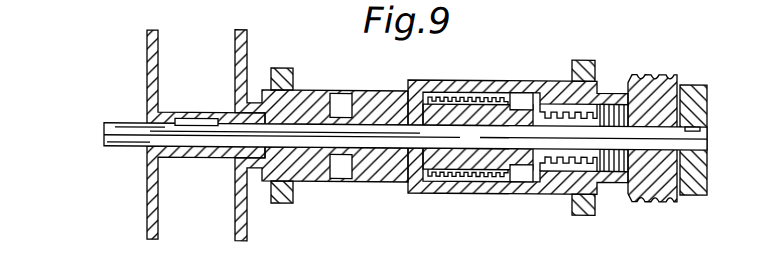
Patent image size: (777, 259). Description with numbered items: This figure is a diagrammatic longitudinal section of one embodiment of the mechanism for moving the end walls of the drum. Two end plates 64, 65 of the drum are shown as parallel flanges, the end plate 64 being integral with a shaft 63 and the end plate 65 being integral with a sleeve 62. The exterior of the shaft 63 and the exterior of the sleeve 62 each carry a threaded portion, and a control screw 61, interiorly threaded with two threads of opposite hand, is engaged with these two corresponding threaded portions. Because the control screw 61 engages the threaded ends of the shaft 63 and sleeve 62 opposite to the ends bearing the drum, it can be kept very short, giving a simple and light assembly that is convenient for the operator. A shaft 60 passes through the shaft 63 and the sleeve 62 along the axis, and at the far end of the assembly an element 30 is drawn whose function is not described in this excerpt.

The pulley 30 is at (645, 70).
The shaft 60 is at (104, 132).
The control screw 61 is at (430, 172).
The sleeve 62 is at (485, 168).
The shaft 63 is at (570, 176).
The end plate 64 is at (147, 44).
The end plate 65 is at (248, 43).